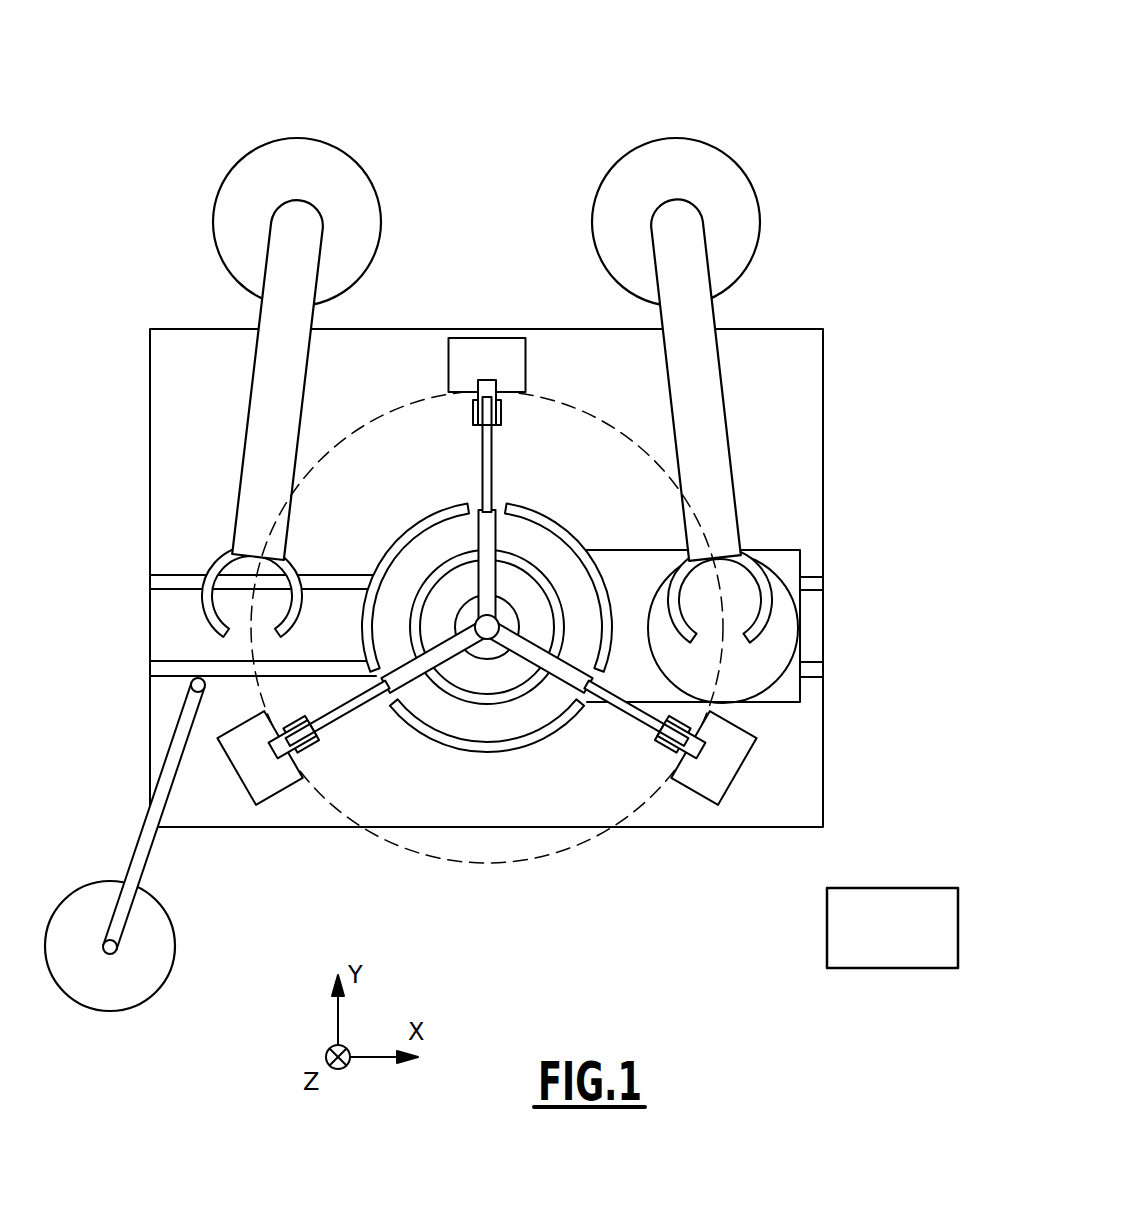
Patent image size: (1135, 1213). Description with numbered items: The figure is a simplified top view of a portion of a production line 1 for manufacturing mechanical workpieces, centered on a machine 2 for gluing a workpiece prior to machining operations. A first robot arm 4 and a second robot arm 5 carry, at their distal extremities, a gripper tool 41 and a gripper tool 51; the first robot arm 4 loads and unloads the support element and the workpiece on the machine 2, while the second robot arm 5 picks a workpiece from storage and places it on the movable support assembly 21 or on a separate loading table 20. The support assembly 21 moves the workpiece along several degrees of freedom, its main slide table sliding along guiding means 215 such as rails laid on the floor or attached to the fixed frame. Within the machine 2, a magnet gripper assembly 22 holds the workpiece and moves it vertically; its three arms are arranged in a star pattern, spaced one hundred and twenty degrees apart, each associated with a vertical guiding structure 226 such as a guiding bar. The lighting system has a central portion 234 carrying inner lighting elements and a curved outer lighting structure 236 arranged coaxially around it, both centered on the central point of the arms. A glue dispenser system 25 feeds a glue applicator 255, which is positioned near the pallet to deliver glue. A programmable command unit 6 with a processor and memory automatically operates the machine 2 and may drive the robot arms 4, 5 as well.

The production line 1 is at (700, 59).
The machine 2 is at (832, 382).
The first robot arm 4 is at (237, 163).
The second robot arm 5 is at (757, 190).
The programmable command unit 6 is at (892, 928).
The loading table 20 is at (763, 655).
The movable support assembly 21 is at (782, 550).
The magnet gripper assembly 22 is at (487, 502).
The glue dispenser system 25 is at (115, 982).
The gripper tool 41 is at (205, 588).
The gripper tool 51 is at (762, 613).
The guiding means 215 is at (152, 575).
The guiding structures 226 is at (493, 353).
The central portion 234 is at (503, 613).
The outer lighting structure 236 is at (408, 535).
The glue applicator 255 is at (185, 703).